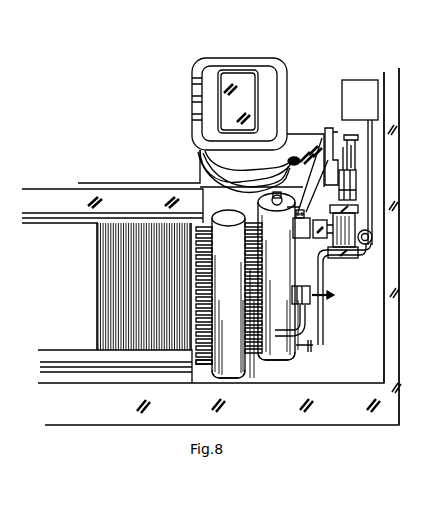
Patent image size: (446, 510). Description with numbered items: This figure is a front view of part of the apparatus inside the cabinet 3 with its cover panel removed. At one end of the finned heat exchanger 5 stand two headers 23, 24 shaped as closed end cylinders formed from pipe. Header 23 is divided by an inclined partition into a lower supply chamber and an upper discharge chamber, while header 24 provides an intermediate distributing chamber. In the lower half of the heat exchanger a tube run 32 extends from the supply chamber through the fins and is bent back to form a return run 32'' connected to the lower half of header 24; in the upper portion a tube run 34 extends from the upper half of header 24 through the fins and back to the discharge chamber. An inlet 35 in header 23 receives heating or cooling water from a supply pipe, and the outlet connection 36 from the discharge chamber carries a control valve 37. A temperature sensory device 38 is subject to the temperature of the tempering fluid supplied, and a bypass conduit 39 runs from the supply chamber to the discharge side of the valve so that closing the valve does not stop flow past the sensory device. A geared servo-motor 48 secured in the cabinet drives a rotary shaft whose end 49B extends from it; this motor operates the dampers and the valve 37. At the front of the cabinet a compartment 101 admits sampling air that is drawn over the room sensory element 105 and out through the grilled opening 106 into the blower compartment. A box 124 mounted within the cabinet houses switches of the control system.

The cabinet 3 is at (397, 128).
The heat exchanger 5 is at (147, 235).
The header 23 is at (323, 330).
The header 24 is at (246, 378).
The tube run 32 is at (286, 367).
The tube run 32'' is at (194, 385).
The tube run 34 is at (257, 224).
The inlet 35 is at (309, 291).
The outlet connection 36 is at (295, 236).
The control valve 37 is at (368, 231).
The temperature sensory device 38 is at (296, 355).
The bypass conduit 39 is at (323, 309).
The servo-motor 48 is at (310, 136).
The shaft end 49B is at (340, 155).
The compartment 101 is at (268, 90).
The sensory element 105 is at (242, 82).
The grilled opening 106 is at (196, 102).
The box 124 is at (350, 92).